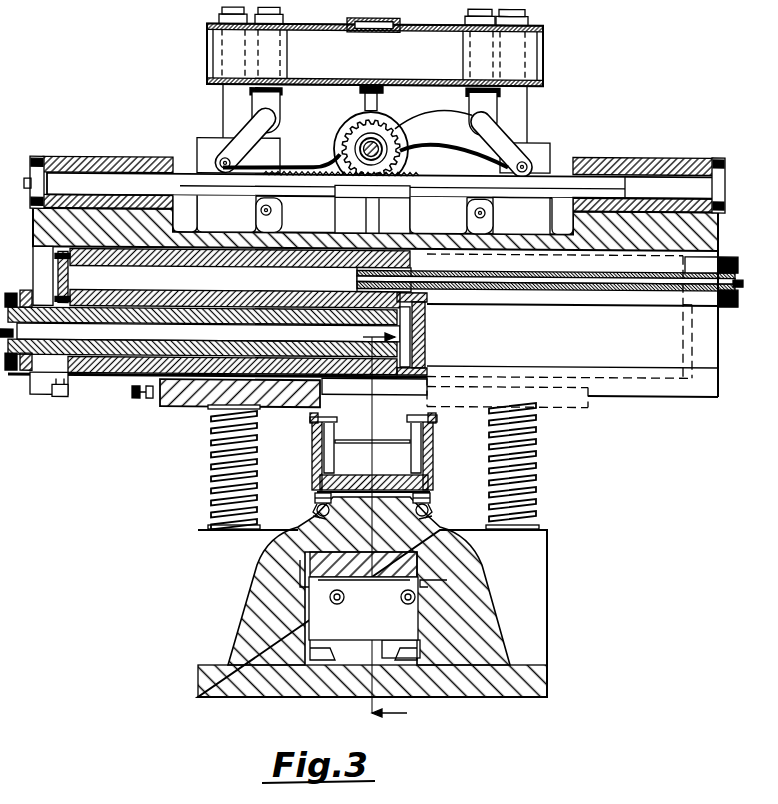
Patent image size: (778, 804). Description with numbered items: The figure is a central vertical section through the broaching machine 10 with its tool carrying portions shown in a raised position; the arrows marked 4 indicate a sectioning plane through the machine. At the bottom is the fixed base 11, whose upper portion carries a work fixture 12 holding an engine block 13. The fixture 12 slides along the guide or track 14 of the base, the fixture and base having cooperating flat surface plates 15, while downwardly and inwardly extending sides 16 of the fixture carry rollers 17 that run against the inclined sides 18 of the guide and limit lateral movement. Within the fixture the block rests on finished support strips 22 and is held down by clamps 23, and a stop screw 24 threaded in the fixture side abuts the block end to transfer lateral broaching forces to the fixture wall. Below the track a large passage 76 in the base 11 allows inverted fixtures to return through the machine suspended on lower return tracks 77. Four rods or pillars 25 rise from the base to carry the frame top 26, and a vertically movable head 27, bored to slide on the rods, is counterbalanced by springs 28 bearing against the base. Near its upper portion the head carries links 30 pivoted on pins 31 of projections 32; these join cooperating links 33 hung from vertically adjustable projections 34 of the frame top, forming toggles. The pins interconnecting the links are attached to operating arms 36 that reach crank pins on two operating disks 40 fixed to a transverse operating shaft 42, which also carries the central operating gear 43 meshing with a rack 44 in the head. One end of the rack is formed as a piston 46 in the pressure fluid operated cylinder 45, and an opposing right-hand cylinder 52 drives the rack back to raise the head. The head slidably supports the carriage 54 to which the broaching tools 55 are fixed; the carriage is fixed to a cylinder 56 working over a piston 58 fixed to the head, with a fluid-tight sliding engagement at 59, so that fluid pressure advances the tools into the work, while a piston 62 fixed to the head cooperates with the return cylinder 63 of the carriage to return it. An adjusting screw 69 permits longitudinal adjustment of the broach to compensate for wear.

The section line 4- 4 is at (379, 529).
The broaching machine 10 is at (202, 563).
The fixed base 11 is at (507, 638).
The fixture 12 is at (435, 467).
The engine block 13 is at (433, 453).
The guide or track 14 is at (435, 498).
The flat surface plates 15 is at (435, 492).
The arms or sides 16 is at (438, 509).
The rollers 17 is at (435, 518).
The inclined sides 18 is at (435, 503).
The support strips 22 is at (410, 473).
The clamps 23 is at (328, 418).
The stop screw 24 is at (438, 443).
The rods or pillars 25 is at (217, 492).
The frame top 26 is at (545, 72).
The head 27 is at (552, 148).
The springs 28 is at (213, 462).
The links 30 is at (247, 198).
The pins 31 is at (275, 208).
The projections 32 is at (280, 223).
The cooperating links 33 is at (238, 138).
The projections 34 is at (277, 105).
The operating arms 36 is at (312, 163).
The operating disks 40 is at (409, 158).
The operating shaft 42 is at (381, 130).
The operating gear 43 is at (357, 132).
The rack 44 is at (323, 185).
The pressure fluid operated cylinder 45 is at (50, 155).
The piston 46 is at (68, 181).
The right-hand cylinder 52 is at (690, 155).
The carriage 54 is at (125, 371).
The broaching tools 55 is at (170, 406).
The cylinder 56 is at (426, 324).
The piston 58 is at (426, 344).
The fluid-tight sliding engagement 59 is at (90, 372).
The piston 62 is at (453, 269).
The return cylinder 63 is at (68, 286).
The adjusting screw 69 is at (142, 397).
The passage 76 is at (343, 655).
The lower return tracks 77 is at (447, 580).